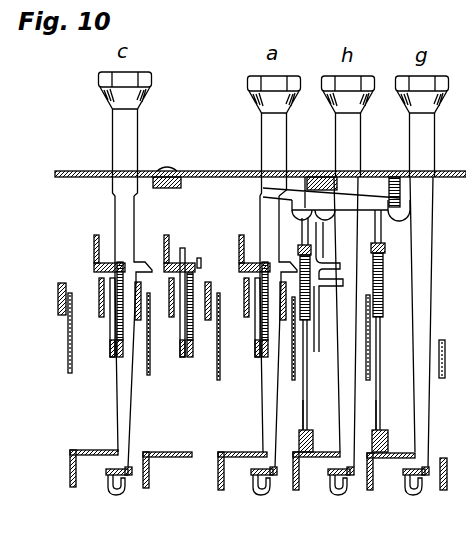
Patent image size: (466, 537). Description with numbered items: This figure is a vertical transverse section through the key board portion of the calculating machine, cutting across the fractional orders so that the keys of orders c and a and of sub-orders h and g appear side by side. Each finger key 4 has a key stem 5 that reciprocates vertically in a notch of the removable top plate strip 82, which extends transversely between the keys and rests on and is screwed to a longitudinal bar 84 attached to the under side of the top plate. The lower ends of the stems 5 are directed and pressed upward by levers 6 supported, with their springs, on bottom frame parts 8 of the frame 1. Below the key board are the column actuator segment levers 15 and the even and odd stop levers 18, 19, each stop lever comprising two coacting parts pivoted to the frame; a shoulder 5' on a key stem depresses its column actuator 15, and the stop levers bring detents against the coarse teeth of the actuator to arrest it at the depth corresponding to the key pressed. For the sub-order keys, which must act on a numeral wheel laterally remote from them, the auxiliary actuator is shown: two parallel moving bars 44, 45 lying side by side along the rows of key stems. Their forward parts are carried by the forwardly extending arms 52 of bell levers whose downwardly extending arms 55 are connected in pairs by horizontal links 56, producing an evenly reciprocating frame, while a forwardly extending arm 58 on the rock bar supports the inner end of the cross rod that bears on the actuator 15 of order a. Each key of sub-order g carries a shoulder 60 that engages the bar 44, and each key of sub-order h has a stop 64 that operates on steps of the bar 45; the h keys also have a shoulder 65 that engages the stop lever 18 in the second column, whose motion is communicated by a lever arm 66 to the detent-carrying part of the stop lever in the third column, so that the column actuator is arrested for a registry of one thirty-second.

The frame 1 is at (68, 352).
The finger key 4 is at (323, 79).
The key stem 5 is at (274, 288).
The key stem shoulder 5' is at (212, 331).
The lever 6 is at (258, 478).
The bottom frame part 8 is at (170, 458).
The column actuator segment lever 15 is at (60, 303).
The even stop lever 18 is at (182, 345).
The odd stop lever 19 is at (190, 355).
The parallel moving bar 44 is at (374, 280).
The parallel moving bar 45 is at (303, 250).
The forwardly extending arm 52 is at (392, 352).
The downwardly extending arm 55 is at (378, 420).
The horizontal link 56 is at (308, 433).
The forwardly extending arm 58 is at (305, 420).
The shoulder 60 is at (399, 226).
The stop 64 is at (309, 180).
The shoulder 65 is at (333, 262).
The lever arm 66 is at (305, 330).
The strip 82 is at (213, 171).
The longitudinal bar 84 is at (170, 188).